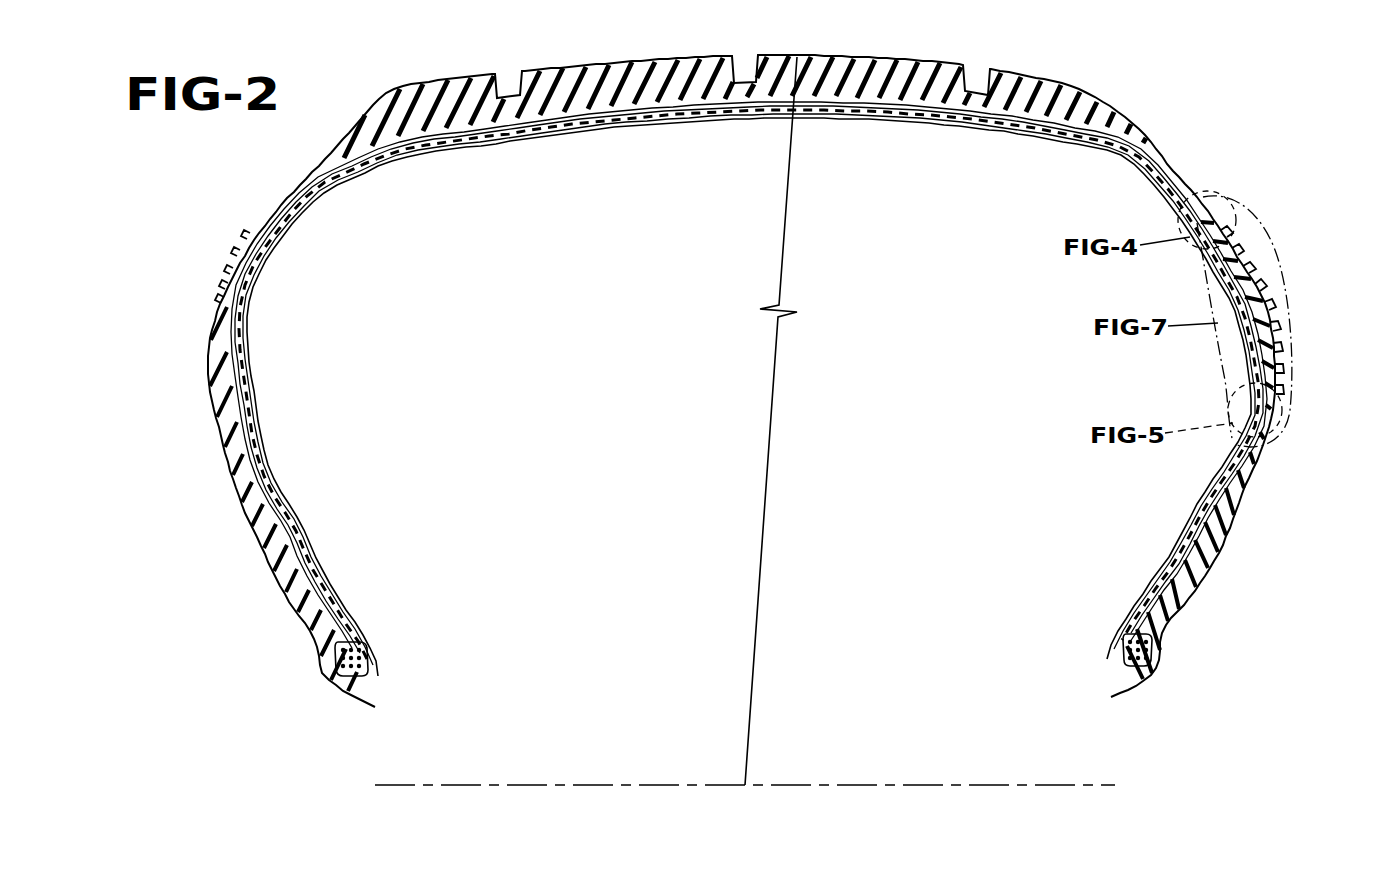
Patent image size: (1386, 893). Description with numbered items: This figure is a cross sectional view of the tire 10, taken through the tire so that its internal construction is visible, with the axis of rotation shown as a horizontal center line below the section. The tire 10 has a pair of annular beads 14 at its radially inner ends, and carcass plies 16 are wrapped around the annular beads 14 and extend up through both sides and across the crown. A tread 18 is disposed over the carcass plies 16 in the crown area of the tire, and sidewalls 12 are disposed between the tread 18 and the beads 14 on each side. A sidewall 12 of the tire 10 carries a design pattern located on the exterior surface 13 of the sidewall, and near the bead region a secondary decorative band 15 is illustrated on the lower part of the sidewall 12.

The tire 10 is at (1192, 140).
The sidewall 12 is at (234, 519).
The exterior surface 13 is at (218, 438).
The annular bead 14 is at (347, 687).
The secondary decorative band 15 is at (270, 596).
The carcass ply 16 is at (355, 617).
The tread 18 is at (838, 50).